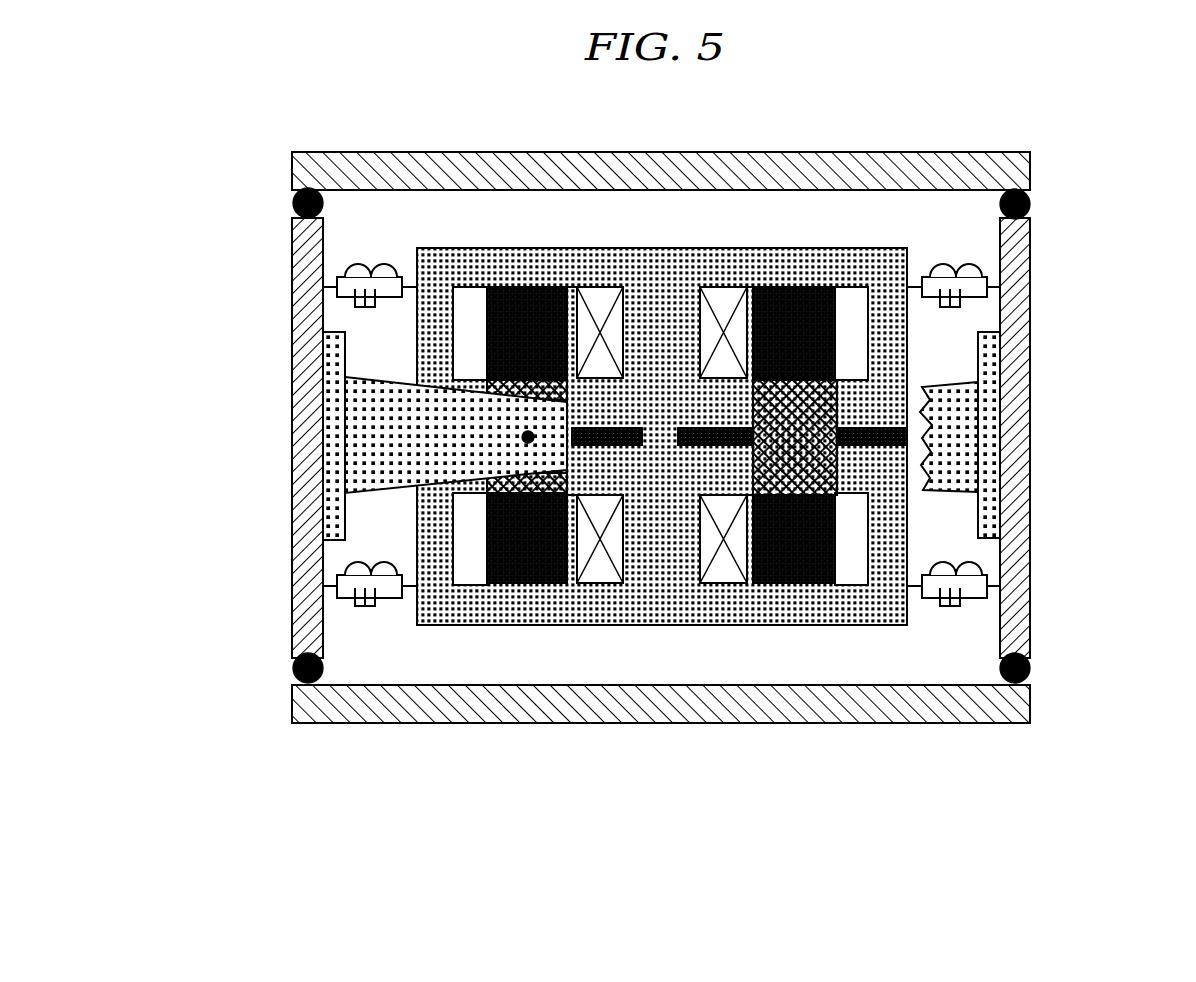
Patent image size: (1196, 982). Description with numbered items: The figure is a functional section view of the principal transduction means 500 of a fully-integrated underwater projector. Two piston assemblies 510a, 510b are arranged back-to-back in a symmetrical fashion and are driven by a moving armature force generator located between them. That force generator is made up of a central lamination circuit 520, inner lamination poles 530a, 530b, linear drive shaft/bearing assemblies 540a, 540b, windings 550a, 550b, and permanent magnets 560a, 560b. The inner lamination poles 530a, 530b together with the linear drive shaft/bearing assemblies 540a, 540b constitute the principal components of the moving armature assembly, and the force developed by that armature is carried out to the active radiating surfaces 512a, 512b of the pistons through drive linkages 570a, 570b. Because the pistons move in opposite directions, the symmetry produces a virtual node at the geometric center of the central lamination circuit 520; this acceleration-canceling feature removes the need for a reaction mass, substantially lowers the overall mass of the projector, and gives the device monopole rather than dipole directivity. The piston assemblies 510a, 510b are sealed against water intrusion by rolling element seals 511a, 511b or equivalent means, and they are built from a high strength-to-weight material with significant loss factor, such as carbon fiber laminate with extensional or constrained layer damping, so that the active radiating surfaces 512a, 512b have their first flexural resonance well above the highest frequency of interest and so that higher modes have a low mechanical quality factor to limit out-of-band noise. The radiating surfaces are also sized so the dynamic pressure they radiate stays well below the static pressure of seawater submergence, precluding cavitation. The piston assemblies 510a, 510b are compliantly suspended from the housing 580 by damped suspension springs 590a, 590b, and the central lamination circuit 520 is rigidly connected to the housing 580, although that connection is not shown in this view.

The principal transduction means 500 is at (681, 104).
The piston assembly 510a is at (345, 436).
The piston assembly 510b is at (973, 501).
The rolling element seal 511a is at (293, 204).
The rolling element seal 511b is at (1031, 668).
The active radiating surface 512a is at (292, 565).
The active radiating surface 512b is at (1031, 325).
The central lamination circuit 520 is at (605, 612).
The inner lamination pole 530a is at (487, 383).
The inner lamination pole 530b is at (820, 492).
The linear drive shaft/bearing assembly 540a is at (636, 440).
The linear drive shaft/bearing assembly 540b is at (690, 445).
The winding 550a is at (600, 298).
The winding 550b is at (723, 298).
The permanent magnet 560a is at (508, 298).
The permanent magnet 560b is at (815, 298).
The drive linkage 570a is at (362, 450).
The drive linkage 570b is at (965, 450).
The housing 580 is at (858, 152).
The damped suspension spring 590a is at (378, 263).
The damped suspension spring 590b is at (963, 263).